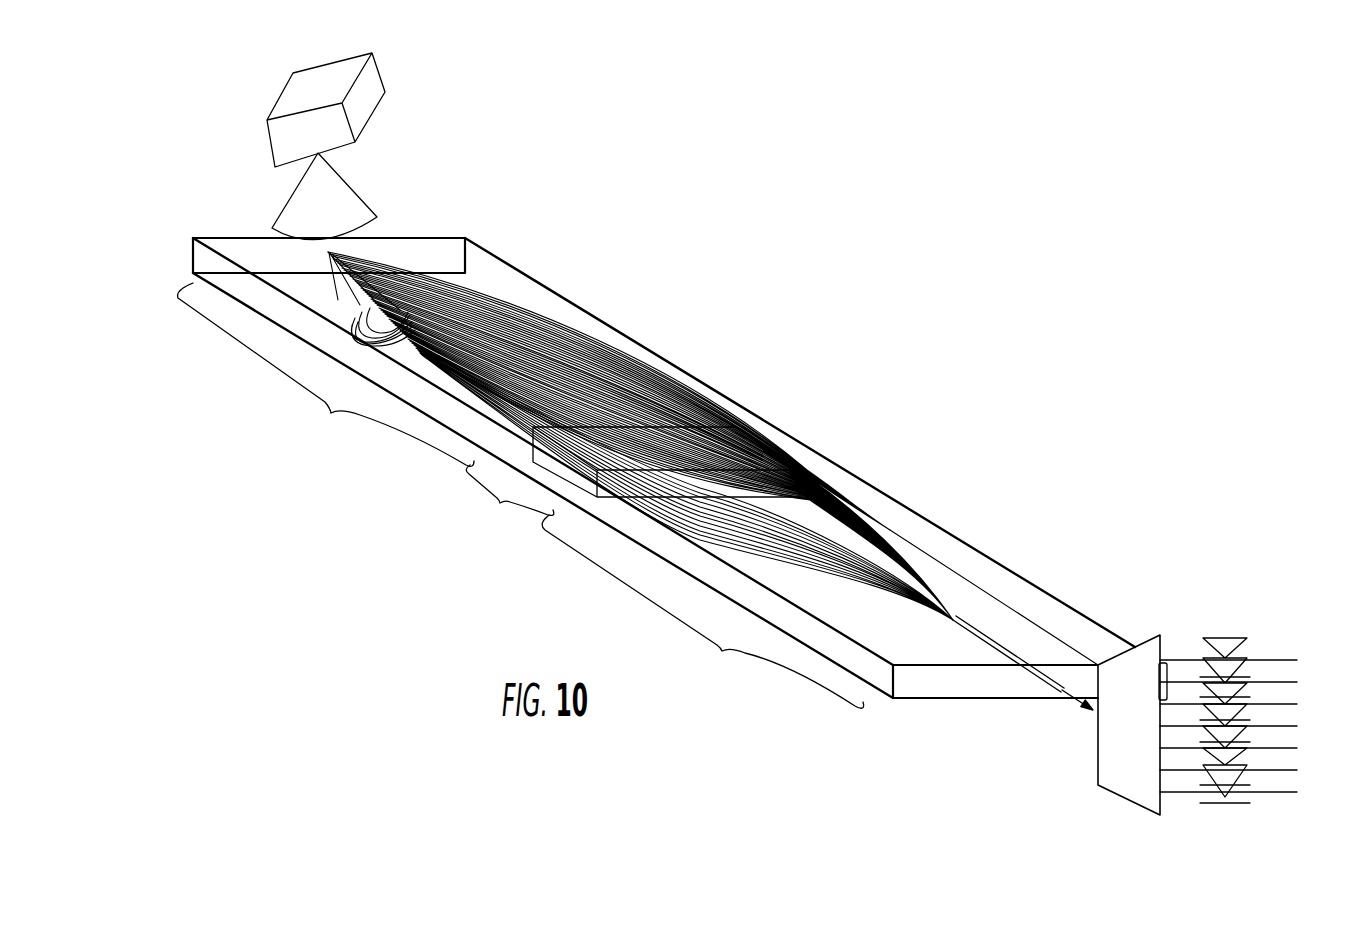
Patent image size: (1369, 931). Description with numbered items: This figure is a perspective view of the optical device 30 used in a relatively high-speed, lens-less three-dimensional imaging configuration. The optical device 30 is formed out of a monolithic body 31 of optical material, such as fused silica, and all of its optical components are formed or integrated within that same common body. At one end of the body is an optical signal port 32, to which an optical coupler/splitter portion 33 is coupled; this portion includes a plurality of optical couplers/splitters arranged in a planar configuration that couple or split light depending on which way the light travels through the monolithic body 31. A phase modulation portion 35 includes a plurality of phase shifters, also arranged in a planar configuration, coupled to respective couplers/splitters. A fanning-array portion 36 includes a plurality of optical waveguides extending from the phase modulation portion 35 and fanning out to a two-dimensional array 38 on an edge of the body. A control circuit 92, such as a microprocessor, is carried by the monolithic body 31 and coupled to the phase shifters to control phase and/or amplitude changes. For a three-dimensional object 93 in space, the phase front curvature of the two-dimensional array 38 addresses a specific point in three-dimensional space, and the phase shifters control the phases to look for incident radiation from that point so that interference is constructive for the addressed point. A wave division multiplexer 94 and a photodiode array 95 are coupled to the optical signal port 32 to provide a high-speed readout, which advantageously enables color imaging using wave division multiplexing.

The optical device 30 is at (871, 303).
The monolithic body 31 is at (506, 262).
The optical signal port 32 is at (1024, 718).
The optical coupler/splitter portion 33 is at (703, 612).
The phase modulation portion 35 is at (510, 499).
The fanning-array portion 36 is at (326, 374).
The two-dimensional array 38 is at (250, 221).
The control circuit 92 is at (577, 433).
The 3D object 93 is at (380, 75).
The wave division multiplexer 94 is at (1108, 788).
The photodiode array 95 is at (1246, 610).